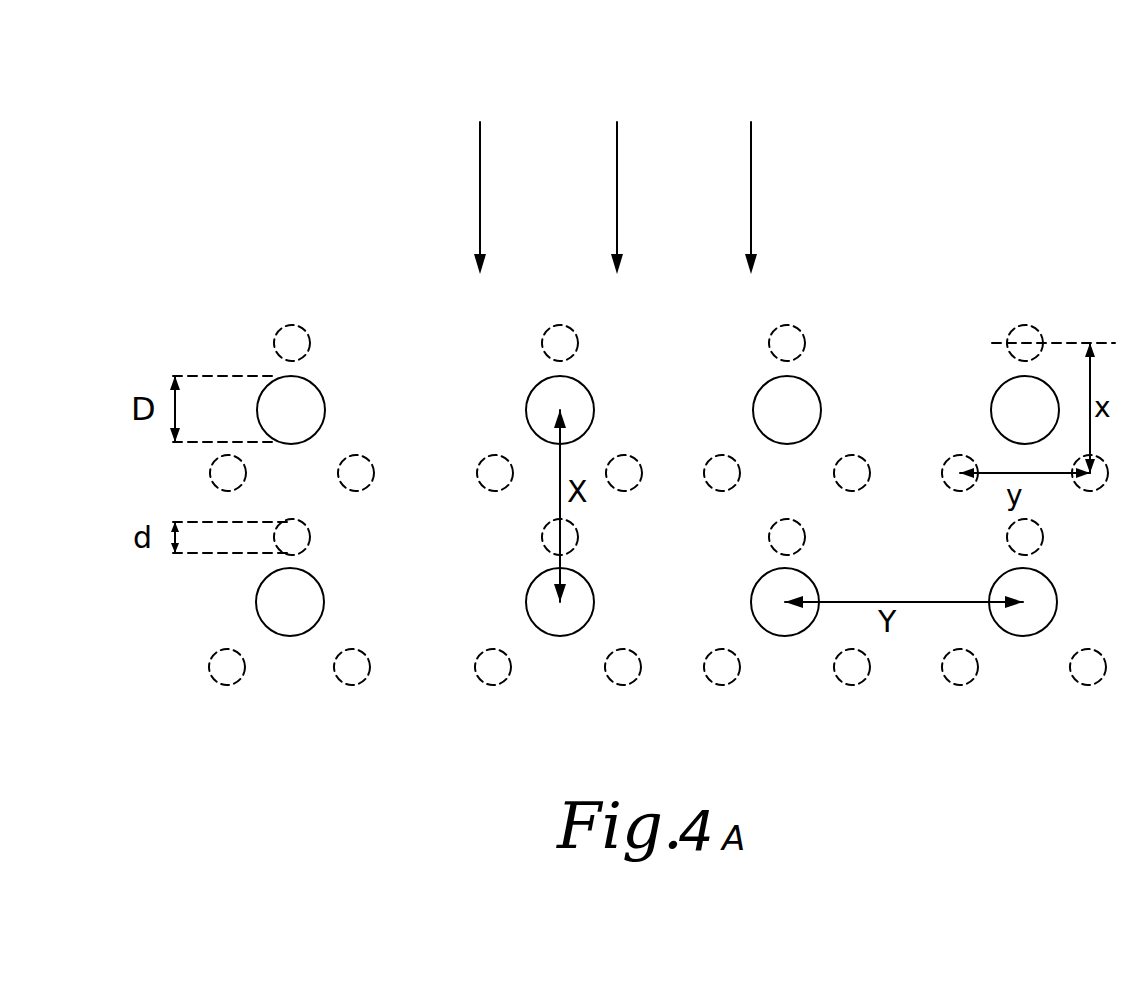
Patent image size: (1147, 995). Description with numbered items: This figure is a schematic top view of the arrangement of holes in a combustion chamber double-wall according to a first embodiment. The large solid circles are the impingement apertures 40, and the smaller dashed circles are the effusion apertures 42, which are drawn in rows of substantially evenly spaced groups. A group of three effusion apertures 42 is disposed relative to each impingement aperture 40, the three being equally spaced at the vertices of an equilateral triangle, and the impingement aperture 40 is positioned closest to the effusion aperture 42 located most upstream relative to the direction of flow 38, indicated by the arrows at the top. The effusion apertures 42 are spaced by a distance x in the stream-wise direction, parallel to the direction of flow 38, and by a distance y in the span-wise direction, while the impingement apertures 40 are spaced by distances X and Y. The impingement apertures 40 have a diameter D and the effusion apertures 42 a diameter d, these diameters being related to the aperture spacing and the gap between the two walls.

The direction of flow 38 is at (480, 162).
The impingement aperture 40 is at (302, 403).
The effusion aperture 42 is at (490, 467).